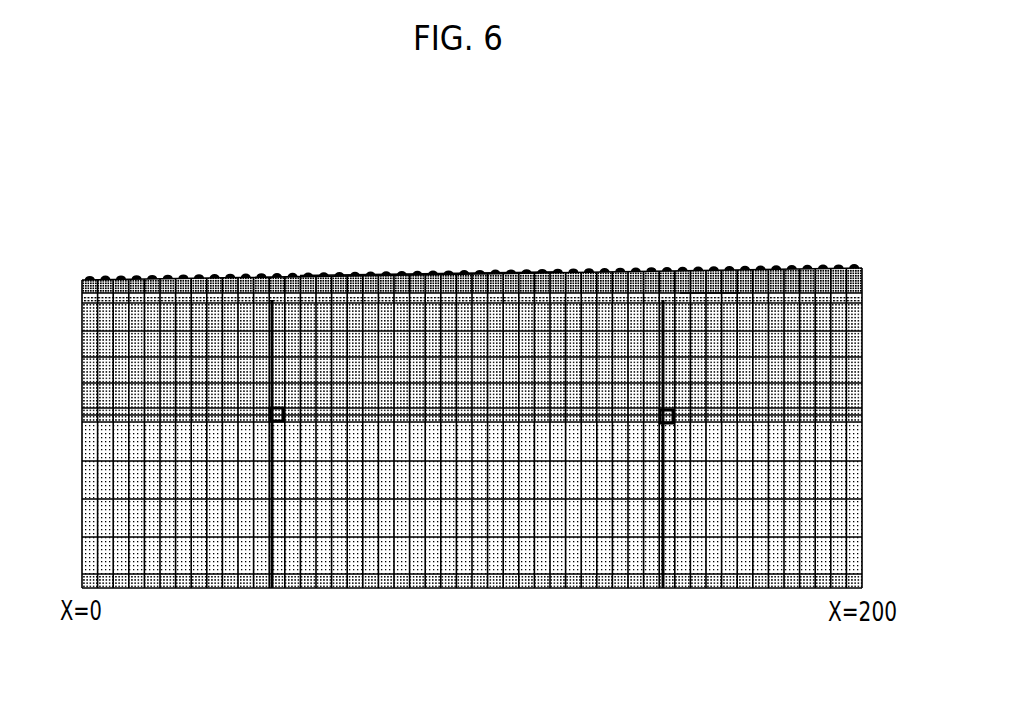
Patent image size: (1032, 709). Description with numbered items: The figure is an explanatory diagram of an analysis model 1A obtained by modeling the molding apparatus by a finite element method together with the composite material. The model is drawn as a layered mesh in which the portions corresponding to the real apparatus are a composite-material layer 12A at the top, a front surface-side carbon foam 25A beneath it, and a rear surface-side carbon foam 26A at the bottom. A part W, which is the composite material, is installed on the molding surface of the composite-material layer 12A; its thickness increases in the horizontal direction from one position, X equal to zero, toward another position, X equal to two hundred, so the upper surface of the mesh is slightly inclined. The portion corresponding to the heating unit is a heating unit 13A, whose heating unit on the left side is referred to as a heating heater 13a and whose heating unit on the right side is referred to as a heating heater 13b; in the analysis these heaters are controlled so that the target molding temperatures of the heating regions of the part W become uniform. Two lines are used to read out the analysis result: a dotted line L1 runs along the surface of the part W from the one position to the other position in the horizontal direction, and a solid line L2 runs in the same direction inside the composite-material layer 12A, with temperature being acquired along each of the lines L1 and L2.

The analysis model 1A is at (295, 208).
The composite-material layer 12A is at (82, 298).
The front surface-side carbon foam 25A is at (82, 368).
The rear surface-side carbon foam 26A is at (82, 480).
The heating heater 13a is at (283, 414).
The heating heater 13b is at (675, 415).
The heating unit 13A is at (490, 475).
The part W is at (433, 276).
The line L1 is at (520, 268).
The line L2 is at (709, 298).